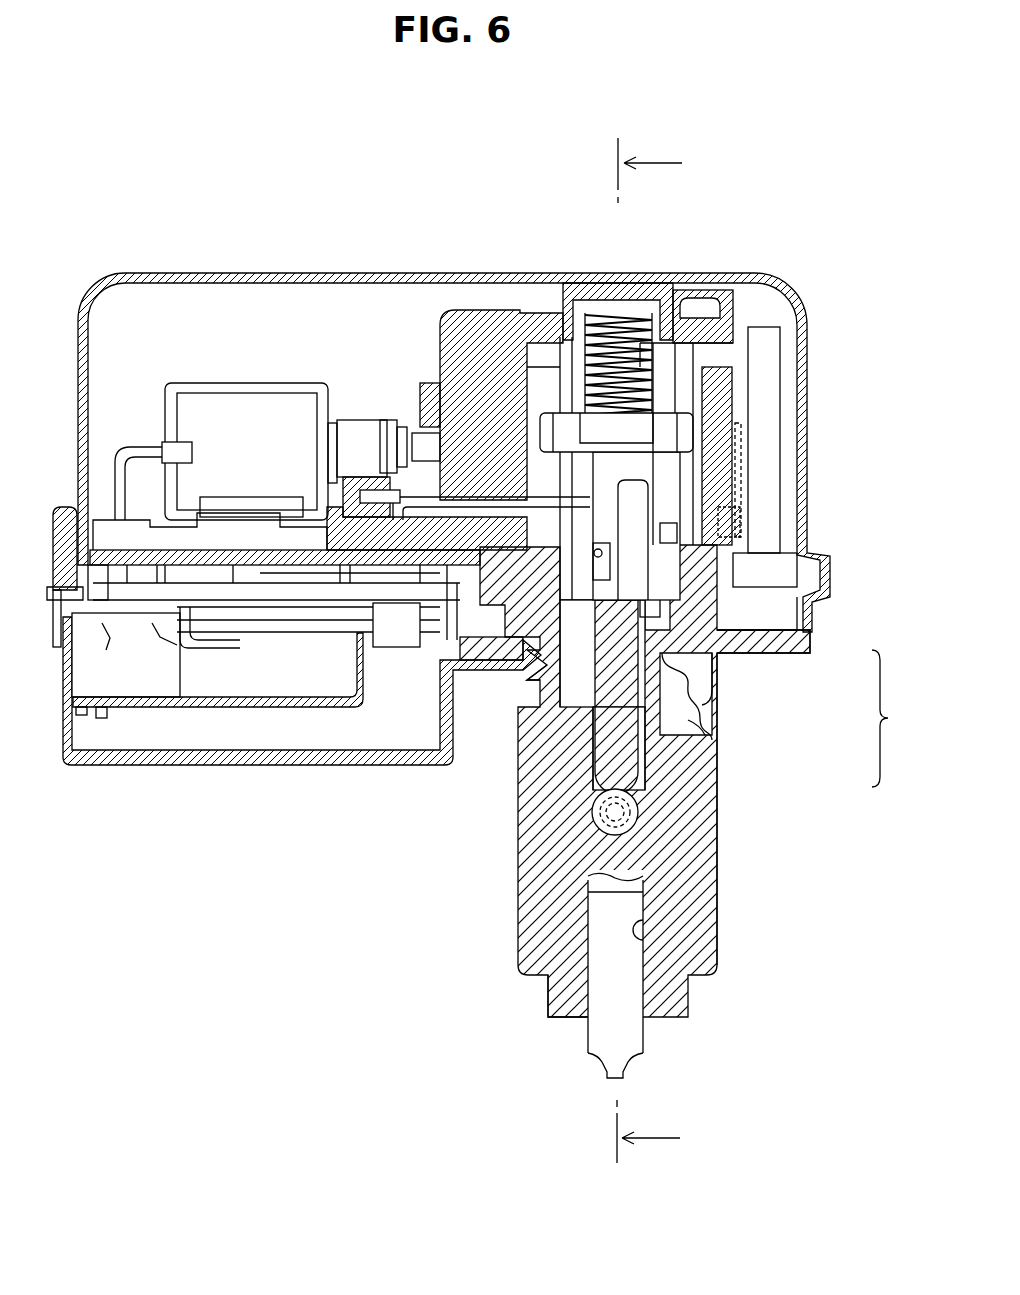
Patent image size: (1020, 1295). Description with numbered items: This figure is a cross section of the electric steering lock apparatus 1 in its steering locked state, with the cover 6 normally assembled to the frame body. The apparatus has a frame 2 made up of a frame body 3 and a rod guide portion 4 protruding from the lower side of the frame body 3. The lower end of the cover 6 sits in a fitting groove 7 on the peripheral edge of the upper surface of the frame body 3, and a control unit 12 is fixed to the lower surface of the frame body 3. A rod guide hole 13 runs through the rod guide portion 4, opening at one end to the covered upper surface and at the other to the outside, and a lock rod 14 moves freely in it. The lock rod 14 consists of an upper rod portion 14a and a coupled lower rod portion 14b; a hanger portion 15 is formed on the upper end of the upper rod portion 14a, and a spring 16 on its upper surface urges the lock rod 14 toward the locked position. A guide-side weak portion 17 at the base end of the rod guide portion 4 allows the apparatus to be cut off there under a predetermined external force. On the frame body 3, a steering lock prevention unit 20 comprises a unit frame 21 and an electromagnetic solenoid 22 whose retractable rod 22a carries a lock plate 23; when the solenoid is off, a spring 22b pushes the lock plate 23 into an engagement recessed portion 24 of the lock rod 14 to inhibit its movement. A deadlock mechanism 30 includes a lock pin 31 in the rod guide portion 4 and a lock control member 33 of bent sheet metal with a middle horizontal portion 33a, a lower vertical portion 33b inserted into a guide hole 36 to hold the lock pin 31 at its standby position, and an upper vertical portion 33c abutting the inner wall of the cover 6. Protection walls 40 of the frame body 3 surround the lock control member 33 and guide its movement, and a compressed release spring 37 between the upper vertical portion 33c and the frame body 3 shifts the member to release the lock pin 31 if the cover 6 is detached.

The electric steering lock apparatus 1 is at (357, 200).
The frame 2 is at (889, 718).
The frame body 3 is at (810, 652).
The rod guide portion 4 is at (693, 773).
The cover 6 is at (418, 273).
The fitting groove 7 is at (878, 568).
The control unit 12 is at (181, 783).
The rod guide hole 13 is at (635, 930).
The lock rod 14 is at (647, 889).
The upper rod portion 14a is at (797, 637).
The lower rod portion 14b is at (602, 925).
The hanger portion 15 is at (573, 420).
The spring 16 is at (660, 407).
The guide-side weak portion 17 is at (527, 685).
The steering lock prevention unit 20 is at (250, 365).
The unit frame 21 is at (468, 330).
The electromagnetic solenoid 22 is at (215, 405).
The retractable rod 22a is at (392, 440).
The spring 22b is at (333, 423).
The lock plate 23 is at (510, 505).
The engagement recessed portion 24 is at (642, 543).
The deadlock mechanism 30 is at (568, 794).
The lock pin 31 is at (632, 822).
The lock control member 33 is at (572, 745).
The middle horizontal portion 33a is at (698, 657).
The lower vertical portion 33b is at (690, 700).
The upper vertical portion 33c is at (708, 473).
The guide hole 36 is at (703, 737).
The release spring 37 is at (743, 523).
The protection walls 40 is at (762, 452).